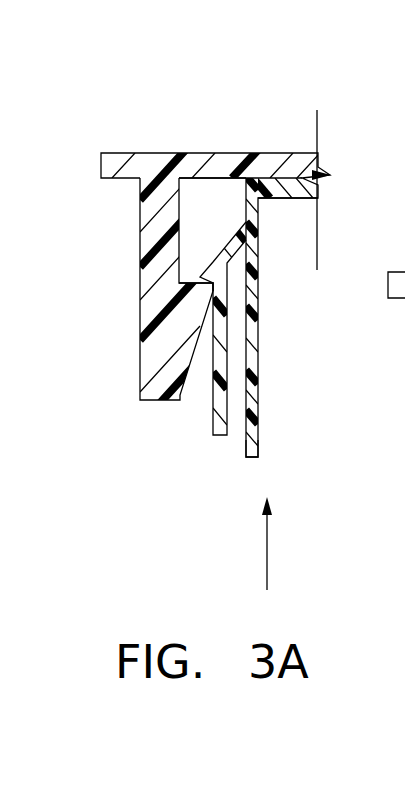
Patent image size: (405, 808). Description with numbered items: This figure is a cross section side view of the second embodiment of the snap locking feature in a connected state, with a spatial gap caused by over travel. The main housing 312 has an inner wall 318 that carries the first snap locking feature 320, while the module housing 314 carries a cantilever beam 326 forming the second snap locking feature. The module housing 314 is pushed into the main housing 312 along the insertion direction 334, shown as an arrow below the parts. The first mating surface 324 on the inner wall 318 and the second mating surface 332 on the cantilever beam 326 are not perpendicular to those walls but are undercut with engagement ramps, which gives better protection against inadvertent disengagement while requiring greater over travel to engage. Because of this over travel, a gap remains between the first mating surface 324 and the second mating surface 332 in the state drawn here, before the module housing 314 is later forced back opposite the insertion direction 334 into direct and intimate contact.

The main housing 312 is at (152, 138).
The module housing 314 is at (270, 395).
The inner wall 318 is at (180, 212).
The first snap locking feature 320 is at (140, 402).
The first mating surface 324 is at (182, 290).
The cantilever beam 326 is at (258, 441).
The second mating surface 332 is at (206, 288).
The insertion direction 334 is at (267, 543).